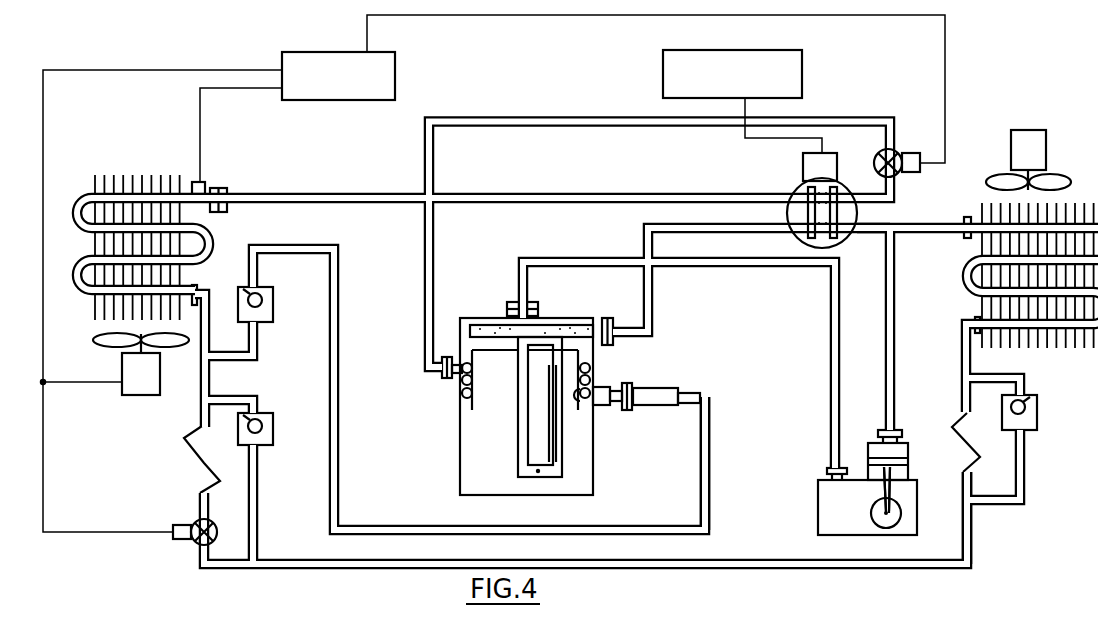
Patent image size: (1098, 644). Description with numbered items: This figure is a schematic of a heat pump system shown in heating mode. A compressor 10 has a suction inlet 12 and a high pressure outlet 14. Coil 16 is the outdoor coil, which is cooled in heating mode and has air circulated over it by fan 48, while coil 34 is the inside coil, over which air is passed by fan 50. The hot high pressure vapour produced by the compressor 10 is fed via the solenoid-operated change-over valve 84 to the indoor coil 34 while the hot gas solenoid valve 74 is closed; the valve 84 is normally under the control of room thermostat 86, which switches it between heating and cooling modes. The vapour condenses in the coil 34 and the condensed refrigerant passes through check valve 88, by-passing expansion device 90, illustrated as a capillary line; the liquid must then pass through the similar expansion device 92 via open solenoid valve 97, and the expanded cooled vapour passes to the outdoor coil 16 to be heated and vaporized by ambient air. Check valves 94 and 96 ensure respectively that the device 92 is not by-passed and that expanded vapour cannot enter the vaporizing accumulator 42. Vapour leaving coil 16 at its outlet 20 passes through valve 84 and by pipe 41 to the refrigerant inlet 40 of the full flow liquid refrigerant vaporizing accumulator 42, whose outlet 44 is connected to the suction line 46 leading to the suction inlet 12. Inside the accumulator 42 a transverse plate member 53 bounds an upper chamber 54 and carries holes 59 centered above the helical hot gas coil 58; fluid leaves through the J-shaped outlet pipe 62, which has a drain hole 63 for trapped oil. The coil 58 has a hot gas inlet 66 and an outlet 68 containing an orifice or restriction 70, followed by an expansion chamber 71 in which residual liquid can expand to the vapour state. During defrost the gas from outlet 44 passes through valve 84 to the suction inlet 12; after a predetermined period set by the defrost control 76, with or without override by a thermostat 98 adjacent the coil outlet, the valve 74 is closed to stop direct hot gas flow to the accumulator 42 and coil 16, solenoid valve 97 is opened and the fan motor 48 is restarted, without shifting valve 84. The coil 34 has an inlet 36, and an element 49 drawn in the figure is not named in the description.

The compressor 10 is at (917, 512).
The suction inlet 12 is at (828, 469).
The high pressure outlet 14 is at (896, 420).
The outdoor coil 16 is at (120, 160).
The outlet 20 is at (196, 287).
The inside coil 34 is at (1048, 360).
The inlet 36 is at (966, 216).
The refrigerant inlet 40 is at (622, 335).
The pipe 41 is at (758, 170).
The full flow liquid refrigerant vaporizing accumulator 42 is at (551, 393).
The outlet 44 is at (548, 296).
The suction line 46 is at (830, 340).
The fan 48 is at (147, 396).
The compressor housing 49 is at (477, 405).
The fan 50 is at (1043, 140).
The transverse plate member 53 is at (480, 352).
The upper chamber 54 is at (487, 325).
The hot gas coil 58 is at (455, 412).
The holes 59 is at (462, 350).
The J-shaped accumulator outlet pipe 62 is at (562, 455).
The drain hole 63 is at (538, 474).
The hot gas inlet 66 is at (443, 378).
The outlet 68 is at (627, 410).
The orifice 70 is at (604, 388).
The expansion chamber 71 is at (662, 388).
The hot gas solenoid-operated valve 74 is at (892, 150).
The defrost control 76 is at (396, 80).
The solenoid-operated valve 84 is at (836, 164).
The room thermostat 86 is at (800, 53).
The check valve 88 is at (1037, 425).
The expansion device 90 is at (978, 448).
The expansion device 92 is at (197, 470).
The check valve 94 is at (266, 447).
The check valve 96 is at (264, 323).
The solenoid valve 97 is at (196, 543).
The thermostat 98 is at (205, 184).